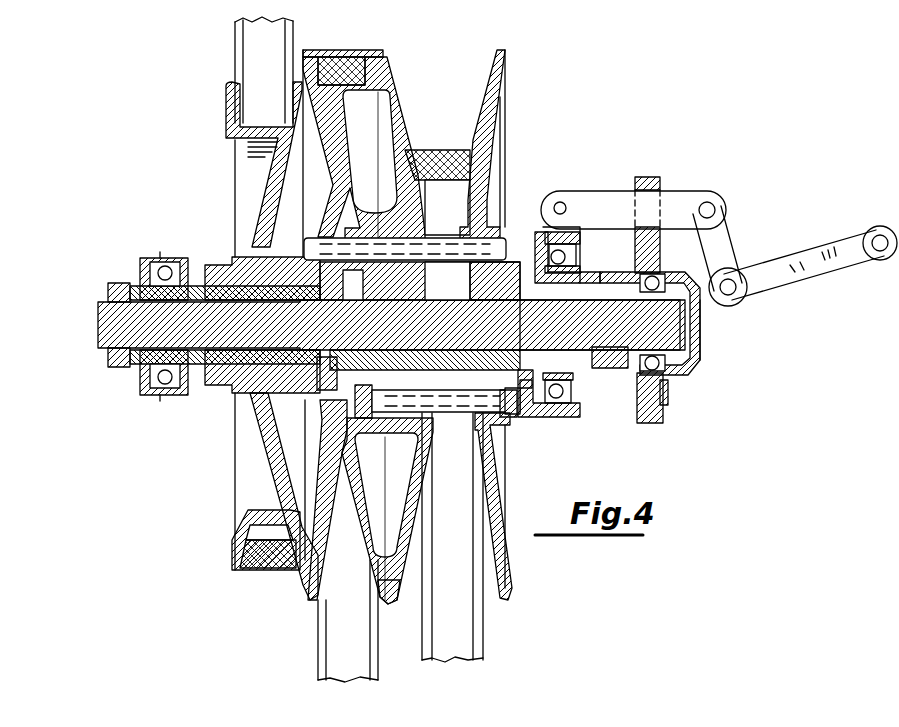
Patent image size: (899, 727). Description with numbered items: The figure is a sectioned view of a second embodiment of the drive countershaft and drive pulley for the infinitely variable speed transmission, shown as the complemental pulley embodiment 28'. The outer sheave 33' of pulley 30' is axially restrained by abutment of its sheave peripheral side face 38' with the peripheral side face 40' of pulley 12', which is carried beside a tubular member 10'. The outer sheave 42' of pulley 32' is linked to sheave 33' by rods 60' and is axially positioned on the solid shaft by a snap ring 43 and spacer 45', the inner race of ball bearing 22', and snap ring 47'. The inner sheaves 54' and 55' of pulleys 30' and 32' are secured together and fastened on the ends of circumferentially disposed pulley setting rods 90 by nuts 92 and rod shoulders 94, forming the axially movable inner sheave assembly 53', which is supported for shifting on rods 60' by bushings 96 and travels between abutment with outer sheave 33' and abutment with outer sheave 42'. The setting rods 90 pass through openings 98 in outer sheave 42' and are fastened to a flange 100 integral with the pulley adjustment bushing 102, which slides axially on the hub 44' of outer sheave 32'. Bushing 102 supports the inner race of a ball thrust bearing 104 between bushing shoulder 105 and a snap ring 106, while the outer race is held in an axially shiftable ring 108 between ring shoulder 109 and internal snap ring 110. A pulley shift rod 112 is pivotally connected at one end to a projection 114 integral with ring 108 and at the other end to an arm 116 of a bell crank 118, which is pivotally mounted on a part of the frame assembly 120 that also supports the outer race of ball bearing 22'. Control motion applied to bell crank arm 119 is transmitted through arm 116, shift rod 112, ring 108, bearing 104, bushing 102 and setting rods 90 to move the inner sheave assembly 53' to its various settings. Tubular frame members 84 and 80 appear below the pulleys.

The tubular frame member 10' is at (252, 293).
The pulley 12' is at (250, 164).
The complemental pulley embodiment 28' is at (371, 129).
The pulley 30' is at (364, 129).
The inner sheave assembly 53' is at (354, 47).
The pulley 32' is at (473, 145).
The rods 60' is at (405, 236).
The bushings 96 is at (420, 262).
The hub flange 43 is at (495, 282).
The hub 44' is at (391, 356).
The pulley adjustment bushing 102 is at (533, 320).
The nuts 92 is at (362, 386).
The rod shoulders 94 is at (425, 395).
The openings 98 is at (452, 412).
The pulley setting rods 90 is at (512, 418).
The flange 100 is at (530, 418).
The internal snap ring 110 is at (572, 417).
The axially shiftable ring 108 is at (543, 200).
The ring shoulder 109 is at (538, 235).
The ball thrust bearing 104 is at (578, 240).
The bushing shoulder 105 is at (575, 253).
The snap ring 106 is at (578, 268).
The projection 114 is at (548, 192).
The pulley shift rod 112 is at (628, 188).
The arm 116 is at (730, 220).
The bell crank 118 is at (787, 241).
The bell crank arm 119 is at (828, 272).
The frame assembly 120 is at (702, 318).
The snap ring 47' is at (719, 330).
The ball bearing 22' is at (677, 397).
The spacer 45' is at (610, 370).
The outer sheave 33' is at (333, 500).
The peripheral side face 40' is at (266, 560).
The sheave peripheral side face 38' is at (284, 508).
The inner sheave 54' is at (385, 524).
The inner sheave 55' is at (394, 607).
The outer sheave 42' is at (499, 519).
The tube 84 is at (478, 648).
The tube 80 is at (350, 670).